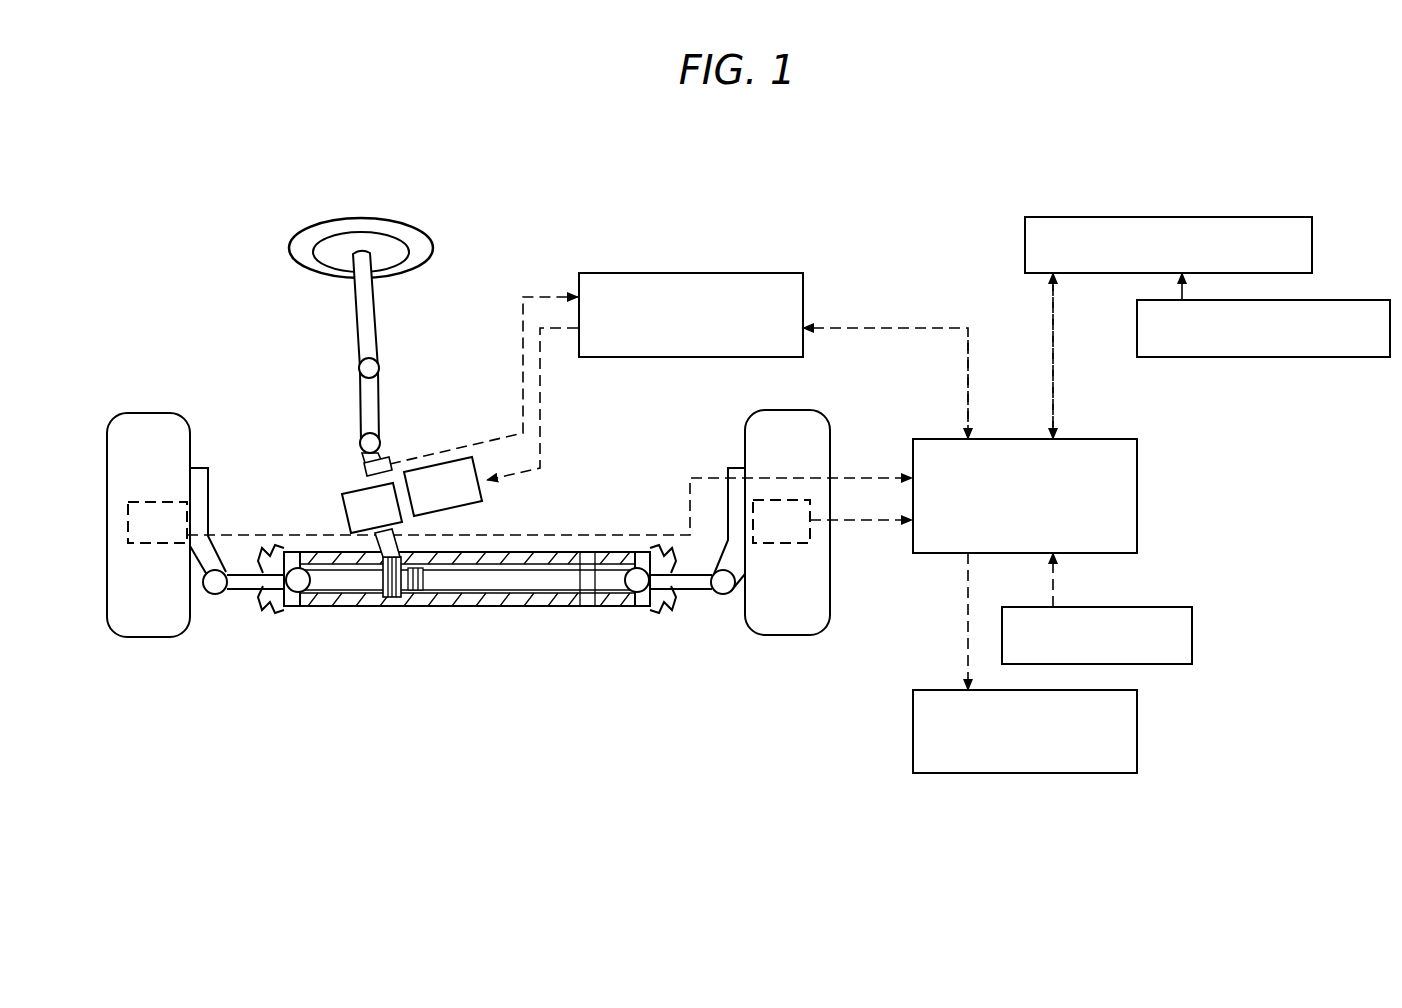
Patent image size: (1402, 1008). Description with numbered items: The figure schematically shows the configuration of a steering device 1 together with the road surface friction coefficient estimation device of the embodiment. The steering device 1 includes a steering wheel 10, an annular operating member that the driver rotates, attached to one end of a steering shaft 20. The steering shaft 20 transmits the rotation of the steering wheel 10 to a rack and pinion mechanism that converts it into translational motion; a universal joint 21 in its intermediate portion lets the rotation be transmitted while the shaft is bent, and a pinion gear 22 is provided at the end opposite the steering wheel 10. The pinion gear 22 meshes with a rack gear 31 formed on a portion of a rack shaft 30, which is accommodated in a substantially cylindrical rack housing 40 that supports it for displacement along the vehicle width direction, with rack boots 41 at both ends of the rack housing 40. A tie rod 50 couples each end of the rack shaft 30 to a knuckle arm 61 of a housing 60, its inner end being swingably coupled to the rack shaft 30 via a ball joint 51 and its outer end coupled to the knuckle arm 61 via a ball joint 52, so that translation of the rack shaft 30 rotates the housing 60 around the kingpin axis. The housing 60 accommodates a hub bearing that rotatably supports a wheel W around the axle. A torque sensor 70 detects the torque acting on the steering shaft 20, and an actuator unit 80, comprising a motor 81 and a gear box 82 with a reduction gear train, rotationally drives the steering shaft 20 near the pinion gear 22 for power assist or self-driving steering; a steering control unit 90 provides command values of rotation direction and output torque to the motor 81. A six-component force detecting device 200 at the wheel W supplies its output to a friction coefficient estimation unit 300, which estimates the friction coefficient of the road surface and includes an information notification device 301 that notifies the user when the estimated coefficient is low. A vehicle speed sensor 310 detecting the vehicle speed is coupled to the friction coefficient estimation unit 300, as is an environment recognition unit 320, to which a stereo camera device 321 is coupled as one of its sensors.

The steering device 1 is at (227, 255).
The steering wheel 10 is at (325, 224).
The steering shaft 20 is at (375, 318).
The universal joint 21 is at (377, 393).
The pinion gear 22 is at (395, 592).
The rack shaft 30 is at (479, 587).
The rack gear 31 is at (415, 583).
The rack housing 40 is at (515, 603).
The rack boots 41 is at (273, 607).
The tie rod 50 is at (260, 584).
The ball joint 51 is at (298, 585).
The ball joint 52 is at (218, 587).
The housing 60 is at (193, 545).
The knuckle arm 61 is at (199, 572).
The torque sensor 70 is at (362, 470).
The actuator unit 80 is at (325, 475).
The motor 81 is at (445, 465).
The gear box 82 is at (354, 511).
The steering control unit 90 is at (752, 273).
The six-component force detecting device 200 is at (783, 542).
The friction coefficient estimation unit 300 is at (1132, 502).
The information notification device 301 is at (1137, 717).
The vehicle speed sensor 310 is at (1192, 626).
The environment recognition unit 320 is at (1203, 217).
The stereo camera device 321 is at (1318, 357).
The wheel W is at (138, 634).